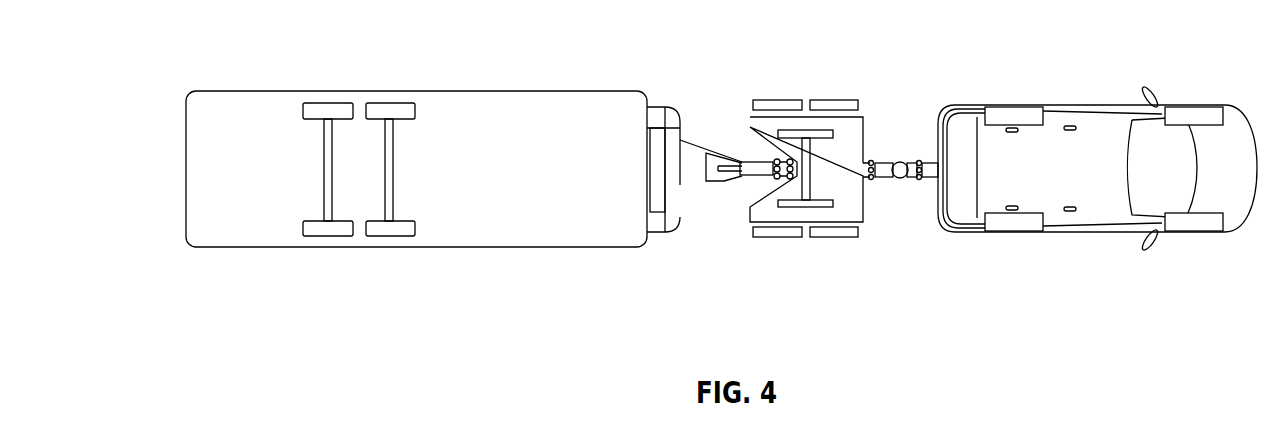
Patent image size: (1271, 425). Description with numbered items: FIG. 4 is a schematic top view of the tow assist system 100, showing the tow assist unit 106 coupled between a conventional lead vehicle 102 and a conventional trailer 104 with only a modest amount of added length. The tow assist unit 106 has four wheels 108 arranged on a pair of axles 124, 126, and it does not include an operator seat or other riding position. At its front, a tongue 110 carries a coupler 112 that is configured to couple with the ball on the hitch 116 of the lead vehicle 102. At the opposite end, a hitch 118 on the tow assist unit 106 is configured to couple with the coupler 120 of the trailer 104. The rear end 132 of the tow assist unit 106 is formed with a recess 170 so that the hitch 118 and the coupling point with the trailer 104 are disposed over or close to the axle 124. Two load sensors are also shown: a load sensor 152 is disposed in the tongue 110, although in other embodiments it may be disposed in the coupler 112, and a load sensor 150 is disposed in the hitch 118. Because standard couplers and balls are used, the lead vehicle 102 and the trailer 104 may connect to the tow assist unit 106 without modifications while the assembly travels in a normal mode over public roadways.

The towing system 100 is at (908, 44).
The lead vehicle 102 is at (1090, 185).
The trailer 104 is at (497, 90).
The tow assist unit 106 is at (803, 171).
The wheels 108 is at (840, 240).
The tongue 110 is at (910, 155).
The coupler 112 is at (903, 161).
The hitch 116 is at (938, 186).
The hitch 118 is at (767, 140).
The coupler 120 is at (742, 178).
The axle 124 is at (773, 250).
The axle 126 is at (832, 240).
The rear end 132 is at (750, 122).
The load sensor 150 is at (768, 180).
The load sensor 152 is at (889, 178).
The recess 170 is at (789, 206).